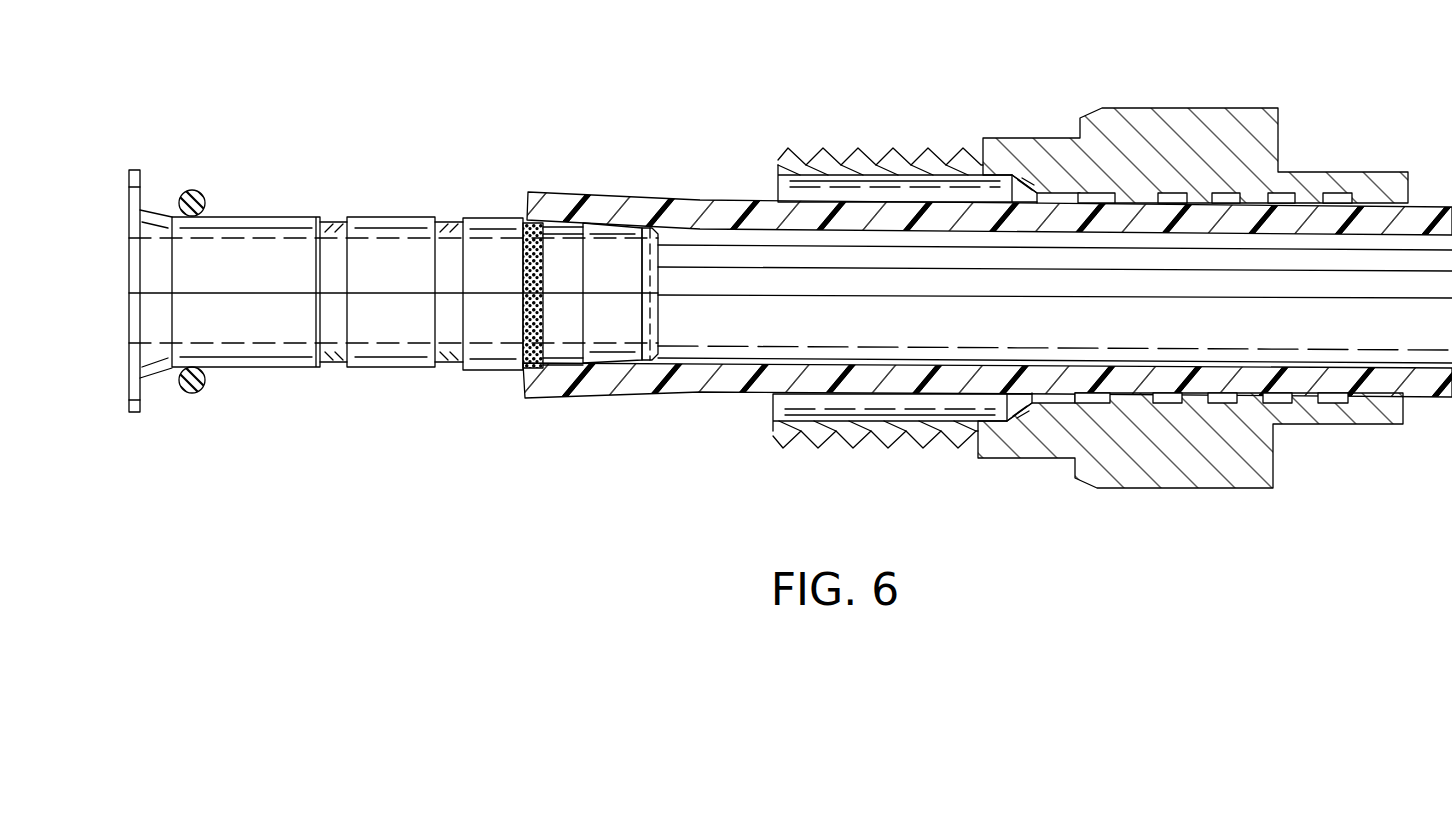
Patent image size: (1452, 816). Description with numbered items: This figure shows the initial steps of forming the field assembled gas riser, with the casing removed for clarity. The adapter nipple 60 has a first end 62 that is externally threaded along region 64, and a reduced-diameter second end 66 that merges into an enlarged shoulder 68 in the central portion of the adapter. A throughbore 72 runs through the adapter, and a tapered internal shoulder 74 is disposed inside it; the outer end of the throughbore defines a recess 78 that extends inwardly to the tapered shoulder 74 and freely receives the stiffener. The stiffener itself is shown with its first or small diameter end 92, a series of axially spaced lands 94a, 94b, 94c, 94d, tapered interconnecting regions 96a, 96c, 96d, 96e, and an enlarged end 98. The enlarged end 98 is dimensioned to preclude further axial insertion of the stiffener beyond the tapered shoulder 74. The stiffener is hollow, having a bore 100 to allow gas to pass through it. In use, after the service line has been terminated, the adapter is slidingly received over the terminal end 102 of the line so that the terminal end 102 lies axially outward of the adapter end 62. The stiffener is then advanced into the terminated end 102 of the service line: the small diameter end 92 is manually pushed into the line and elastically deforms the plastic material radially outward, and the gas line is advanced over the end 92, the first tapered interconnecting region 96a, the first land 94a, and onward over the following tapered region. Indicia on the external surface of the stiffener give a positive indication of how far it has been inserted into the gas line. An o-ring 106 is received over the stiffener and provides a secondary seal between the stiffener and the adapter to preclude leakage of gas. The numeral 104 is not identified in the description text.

The adapter nipple 60 is at (1118, 94).
The first end 62 is at (772, 427).
The externally threaded region 64 is at (850, 152).
The second end 66 is at (1323, 422).
The enlarged shoulder 68 is at (1197, 108).
The throughbore 72 is at (884, 418).
The tapered internal shoulder 74 is at (998, 412).
The recess 78 is at (777, 193).
The small diameter end 92 is at (657, 315).
The first land 94a is at (557, 375).
The second land 94b is at (472, 373).
The third land 94c is at (372, 372).
The fourth land 94d is at (272, 370).
The first tapered interconnecting region 96a is at (627, 220).
The tapered interconnecting region 96c is at (450, 218).
The tapered interconnecting region 96d is at (330, 217).
The tapered interconnecting region 96e is at (153, 208).
The enlarged end 98 is at (138, 172).
The bore 100 is at (227, 240).
The terminal end 102 is at (525, 209).
The adhesive band 104 is at (528, 267).
The o-ring 106 is at (183, 393).